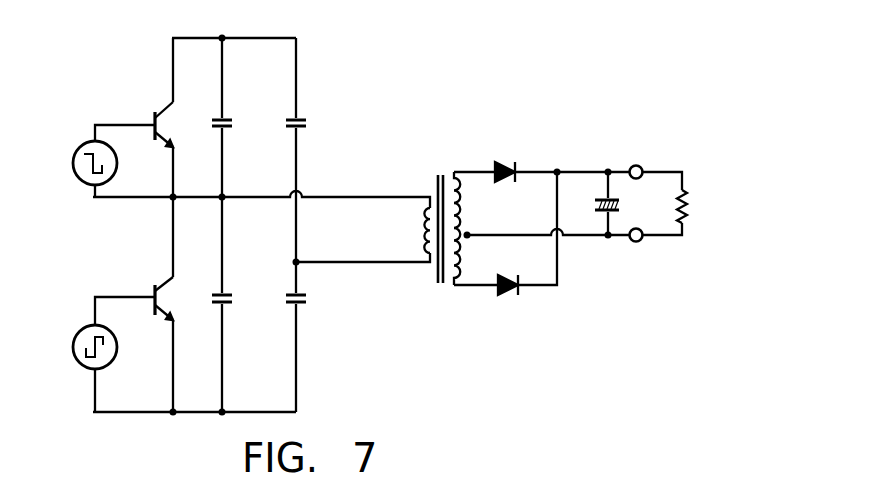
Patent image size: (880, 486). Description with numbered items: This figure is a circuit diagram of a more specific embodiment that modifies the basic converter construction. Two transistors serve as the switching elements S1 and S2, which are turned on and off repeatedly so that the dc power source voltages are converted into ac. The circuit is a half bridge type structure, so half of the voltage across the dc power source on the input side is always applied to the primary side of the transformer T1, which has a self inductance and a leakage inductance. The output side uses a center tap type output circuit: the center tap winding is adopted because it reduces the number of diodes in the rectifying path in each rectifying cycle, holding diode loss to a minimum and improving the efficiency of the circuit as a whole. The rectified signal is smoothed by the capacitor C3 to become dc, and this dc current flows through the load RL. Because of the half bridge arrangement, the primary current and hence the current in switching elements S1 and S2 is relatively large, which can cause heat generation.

The switching element S1 is at (123, 133).
The switching element S2 is at (123, 314).
The transformer T1 is at (442, 175).
The capacitor C3 is at (600, 212).
The load RL is at (686, 200).